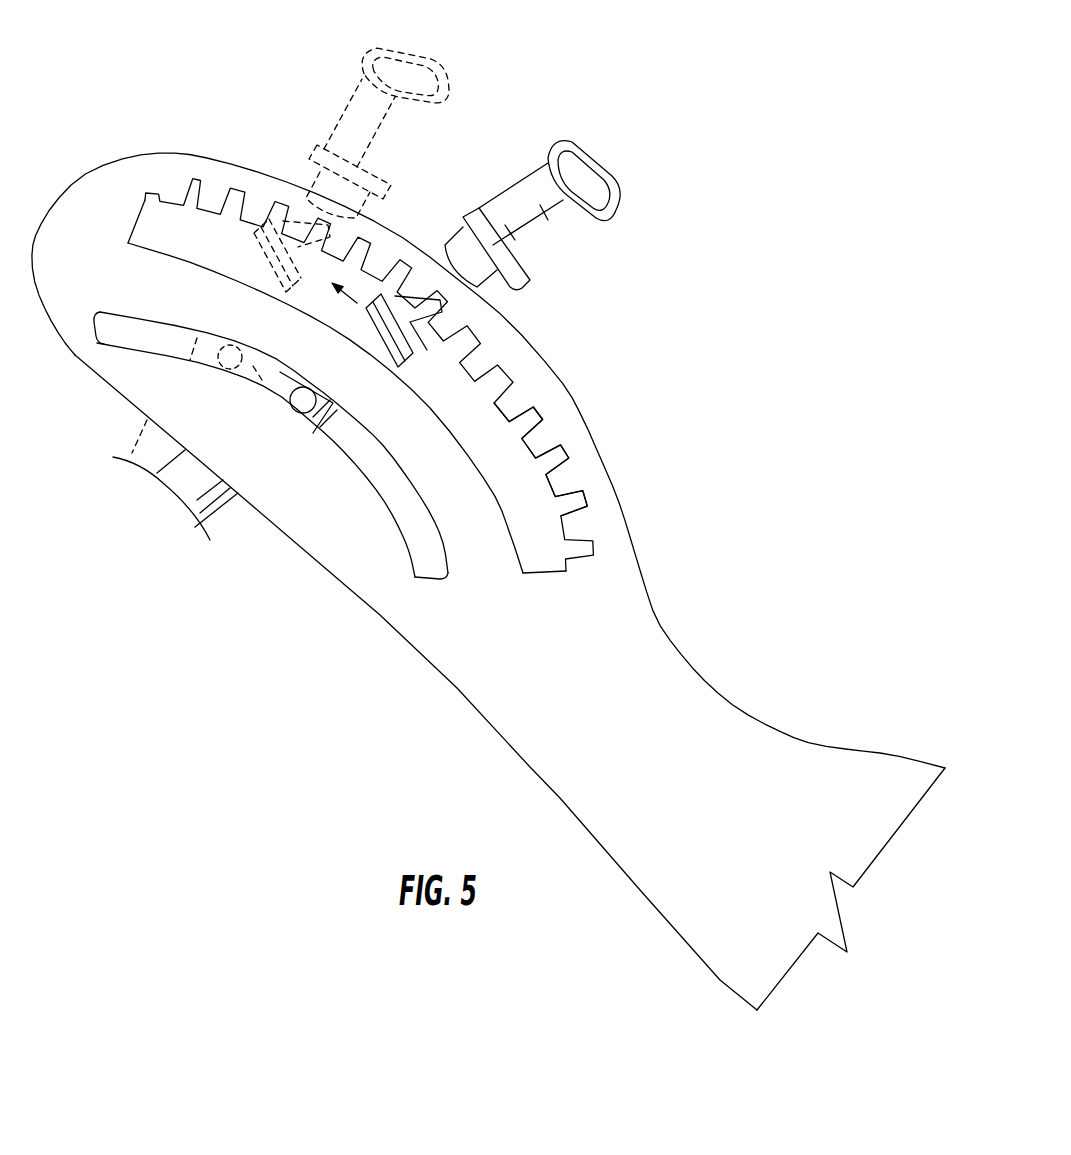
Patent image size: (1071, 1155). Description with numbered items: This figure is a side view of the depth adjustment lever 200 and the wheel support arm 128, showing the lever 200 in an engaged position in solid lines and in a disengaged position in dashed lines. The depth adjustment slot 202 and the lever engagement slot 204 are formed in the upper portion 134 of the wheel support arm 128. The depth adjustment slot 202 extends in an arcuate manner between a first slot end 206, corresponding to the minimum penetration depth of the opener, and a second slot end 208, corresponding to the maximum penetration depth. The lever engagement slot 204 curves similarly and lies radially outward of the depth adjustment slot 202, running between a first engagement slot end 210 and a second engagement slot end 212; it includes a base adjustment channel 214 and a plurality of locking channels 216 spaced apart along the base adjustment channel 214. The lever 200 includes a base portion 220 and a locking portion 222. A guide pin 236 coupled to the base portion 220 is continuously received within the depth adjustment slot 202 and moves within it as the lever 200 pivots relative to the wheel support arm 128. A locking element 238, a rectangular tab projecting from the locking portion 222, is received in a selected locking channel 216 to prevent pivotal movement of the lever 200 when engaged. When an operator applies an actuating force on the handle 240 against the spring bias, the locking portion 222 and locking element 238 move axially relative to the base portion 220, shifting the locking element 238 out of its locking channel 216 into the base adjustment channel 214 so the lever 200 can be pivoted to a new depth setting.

The wheel support arm 128 is at (797, 778).
The upper portion of the wheel support arm 134 is at (708, 706).
The depth adjustment lever 200 is at (501, 145).
The depth adjustment slot 202 is at (257, 481).
The lever engagement slot 204 is at (455, 456).
The first slot end 206 is at (92, 328).
The second slot end 208 is at (430, 582).
The first engagement slot end 210 is at (392, 389).
The second engagement slot end 212 is at (543, 587).
The base adjustment channel 214 is at (198, 264).
The locking channels 216 is at (545, 407).
The base portion 220 is at (153, 450).
The locking portion 222 is at (350, 194).
The guide pin 236 is at (229, 368).
The locking element 238 is at (305, 240).
The handle 240 is at (407, 62).